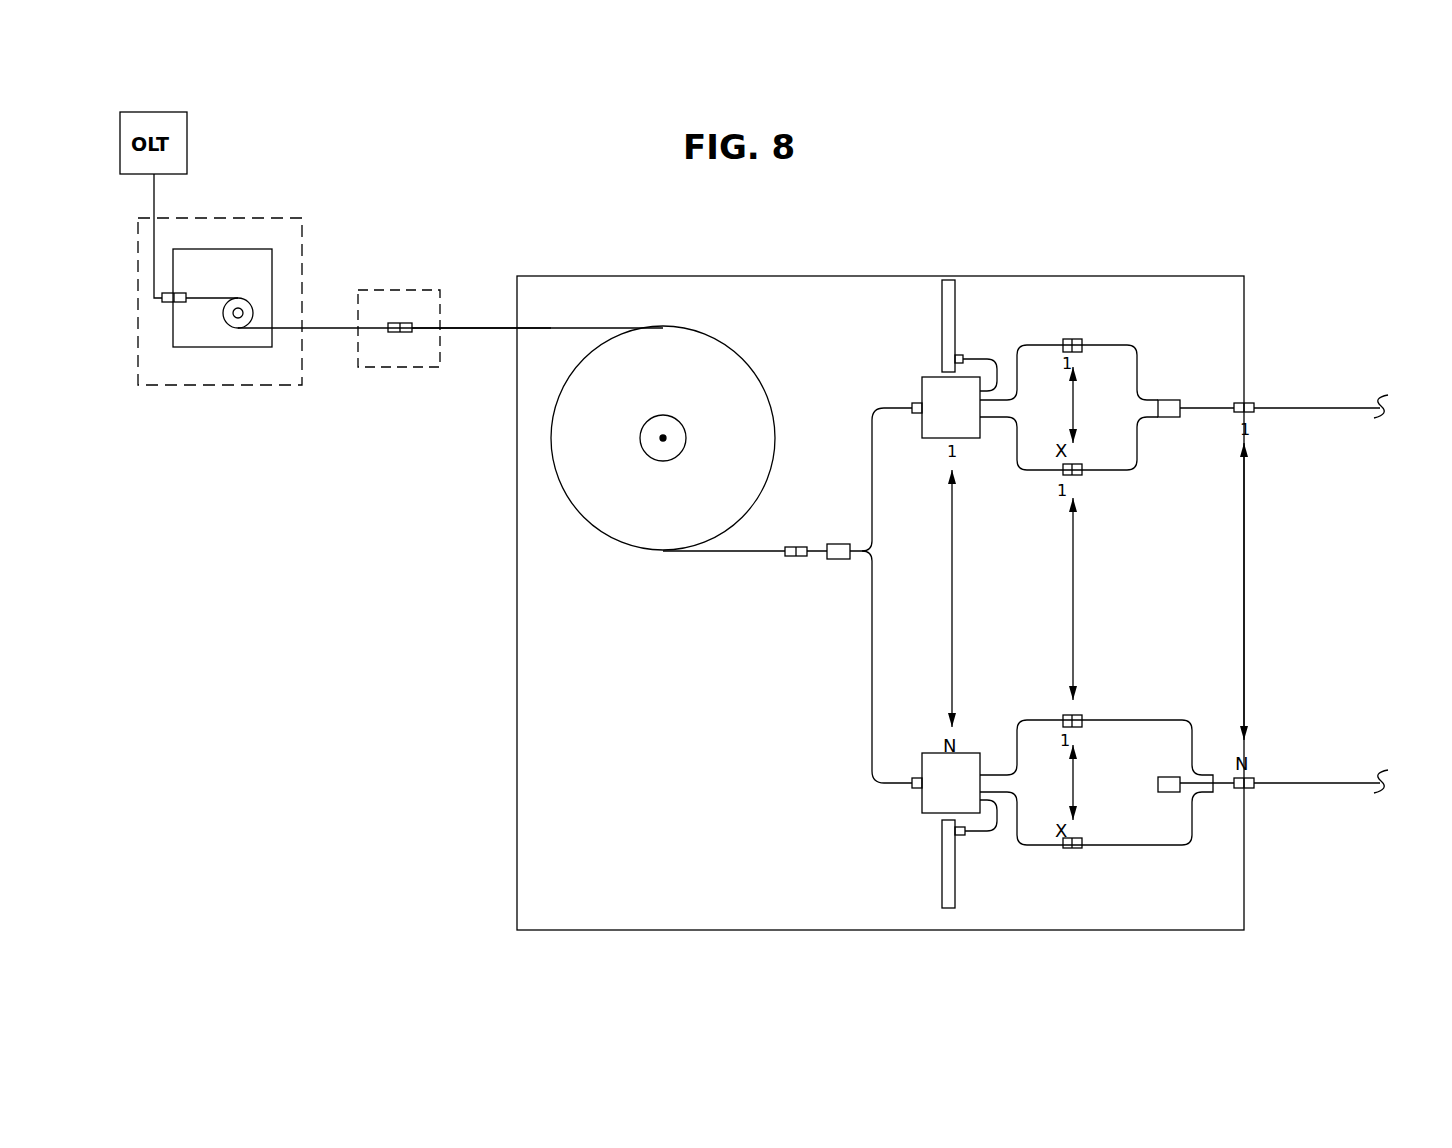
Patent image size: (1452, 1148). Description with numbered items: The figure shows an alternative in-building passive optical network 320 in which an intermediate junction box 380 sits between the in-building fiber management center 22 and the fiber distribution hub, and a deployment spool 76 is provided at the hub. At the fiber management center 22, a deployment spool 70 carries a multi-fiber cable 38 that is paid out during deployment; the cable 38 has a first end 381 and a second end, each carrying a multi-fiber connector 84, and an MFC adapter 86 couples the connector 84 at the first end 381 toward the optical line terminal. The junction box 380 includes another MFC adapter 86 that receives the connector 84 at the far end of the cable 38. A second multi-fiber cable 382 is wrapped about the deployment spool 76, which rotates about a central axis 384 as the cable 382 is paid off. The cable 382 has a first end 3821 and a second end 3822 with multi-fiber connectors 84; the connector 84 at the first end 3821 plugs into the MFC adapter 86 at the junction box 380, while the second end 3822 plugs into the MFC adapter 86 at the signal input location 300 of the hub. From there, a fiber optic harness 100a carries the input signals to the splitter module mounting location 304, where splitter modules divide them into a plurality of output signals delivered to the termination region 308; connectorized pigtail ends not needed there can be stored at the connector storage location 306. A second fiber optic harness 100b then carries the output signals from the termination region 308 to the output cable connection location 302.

The in-building fiber management center 22 is at (304, 232).
The deployment spool 70 is at (238, 328).
The multi-fiber cable 38 is at (328, 330).
The first end of the multi-fiber cable 381 is at (377, 331).
The second end of the multi-fiber cable 3822 is at (197, 302).
The first end of the multi-fiber cable 3821 is at (412, 331).
The multi-fiber connector 84 is at (187, 295).
The MFC adapter 86 is at (167, 302).
The in-building passive optical network 320 is at (415, 215).
The intermediate junction box 380 is at (408, 287).
The output cable connection location 302 is at (1262, 517).
The multi-fiber cable 382 is at (555, 325).
The deployment spool 76 is at (582, 517).
The central axis 384 is at (663, 438).
The signal input location 300 is at (807, 582).
The fiber optic harness 100a is at (868, 467).
The splitter module mounting location 304 is at (915, 382).
The connector storage location 306 is at (950, 270).
The fiber optic harness 100b is at (1135, 473).
The termination region 308 is at (1073, 330).